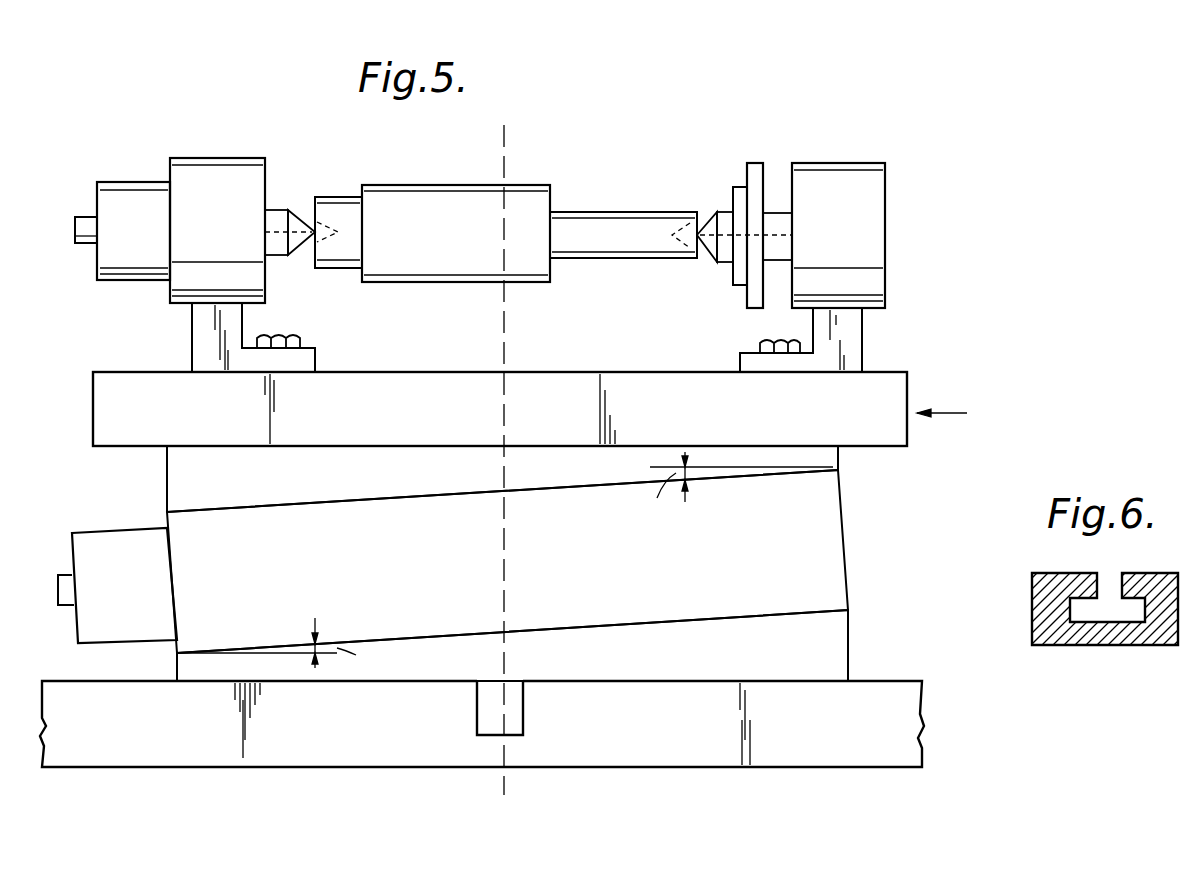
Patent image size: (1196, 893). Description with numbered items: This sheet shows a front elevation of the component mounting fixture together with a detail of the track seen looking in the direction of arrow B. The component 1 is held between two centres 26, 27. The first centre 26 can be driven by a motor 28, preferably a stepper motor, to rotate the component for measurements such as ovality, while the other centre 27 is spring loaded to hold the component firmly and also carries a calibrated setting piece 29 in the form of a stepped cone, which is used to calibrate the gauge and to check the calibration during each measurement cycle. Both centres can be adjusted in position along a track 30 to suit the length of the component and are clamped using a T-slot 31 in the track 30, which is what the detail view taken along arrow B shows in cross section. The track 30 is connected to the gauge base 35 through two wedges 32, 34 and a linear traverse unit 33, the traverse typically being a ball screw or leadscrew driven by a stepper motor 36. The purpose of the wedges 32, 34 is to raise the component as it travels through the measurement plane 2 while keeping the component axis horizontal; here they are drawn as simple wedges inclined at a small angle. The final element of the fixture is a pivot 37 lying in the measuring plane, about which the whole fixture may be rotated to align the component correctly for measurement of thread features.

In FIG. 5, the component 1 is at (437, 203).
In FIG. 5, the measurement plane 2 is at (505, 136).
In FIG. 5, the centre 26 is at (213, 175).
In FIG. 5, the centre 27 is at (840, 182).
In FIG. 5, the motor 28 is at (117, 197).
In FIG. 5, the calibrated setting piece 29 is at (763, 144).
In FIG. 5, the track 30 is at (463, 393).
In FIG. 6, the track 30 is at (1170, 613).
In FIG. 6, the T-slot 31 is at (1107, 580).
In FIG. 5, the wedge 32 is at (317, 484).
In FIG. 5, the linear traverse unit 33 is at (462, 579).
In FIG. 5, the wedge 34 is at (713, 663).
In FIG. 5, the gauge base 35 is at (632, 748).
In FIG. 5, the stepper motor 36 is at (143, 602).
In FIG. 5, the pivot 37 is at (508, 708).
In FIG. 5, the arrow B is at (954, 417).